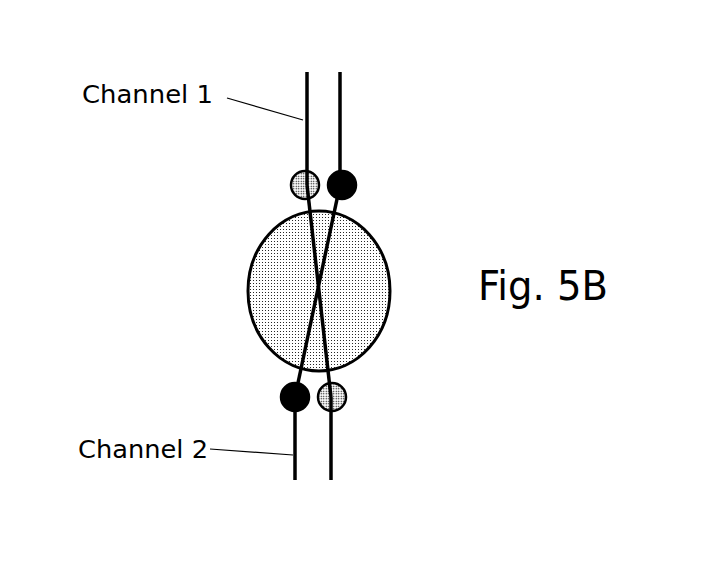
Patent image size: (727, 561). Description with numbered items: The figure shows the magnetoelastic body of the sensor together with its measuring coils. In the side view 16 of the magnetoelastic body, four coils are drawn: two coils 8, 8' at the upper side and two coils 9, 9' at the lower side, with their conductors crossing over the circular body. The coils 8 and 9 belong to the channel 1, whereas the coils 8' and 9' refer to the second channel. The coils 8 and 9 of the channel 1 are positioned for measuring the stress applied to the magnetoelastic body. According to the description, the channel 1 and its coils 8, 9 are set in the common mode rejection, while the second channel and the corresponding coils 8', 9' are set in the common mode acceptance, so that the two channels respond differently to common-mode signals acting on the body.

The channel 1 is at (355, 262).
The side view 16 is at (285, 284).
The coil 8 is at (311, 208).
The coil 8' is at (329, 208).
The coil 9 is at (332, 451).
The coil 9' is at (297, 451).